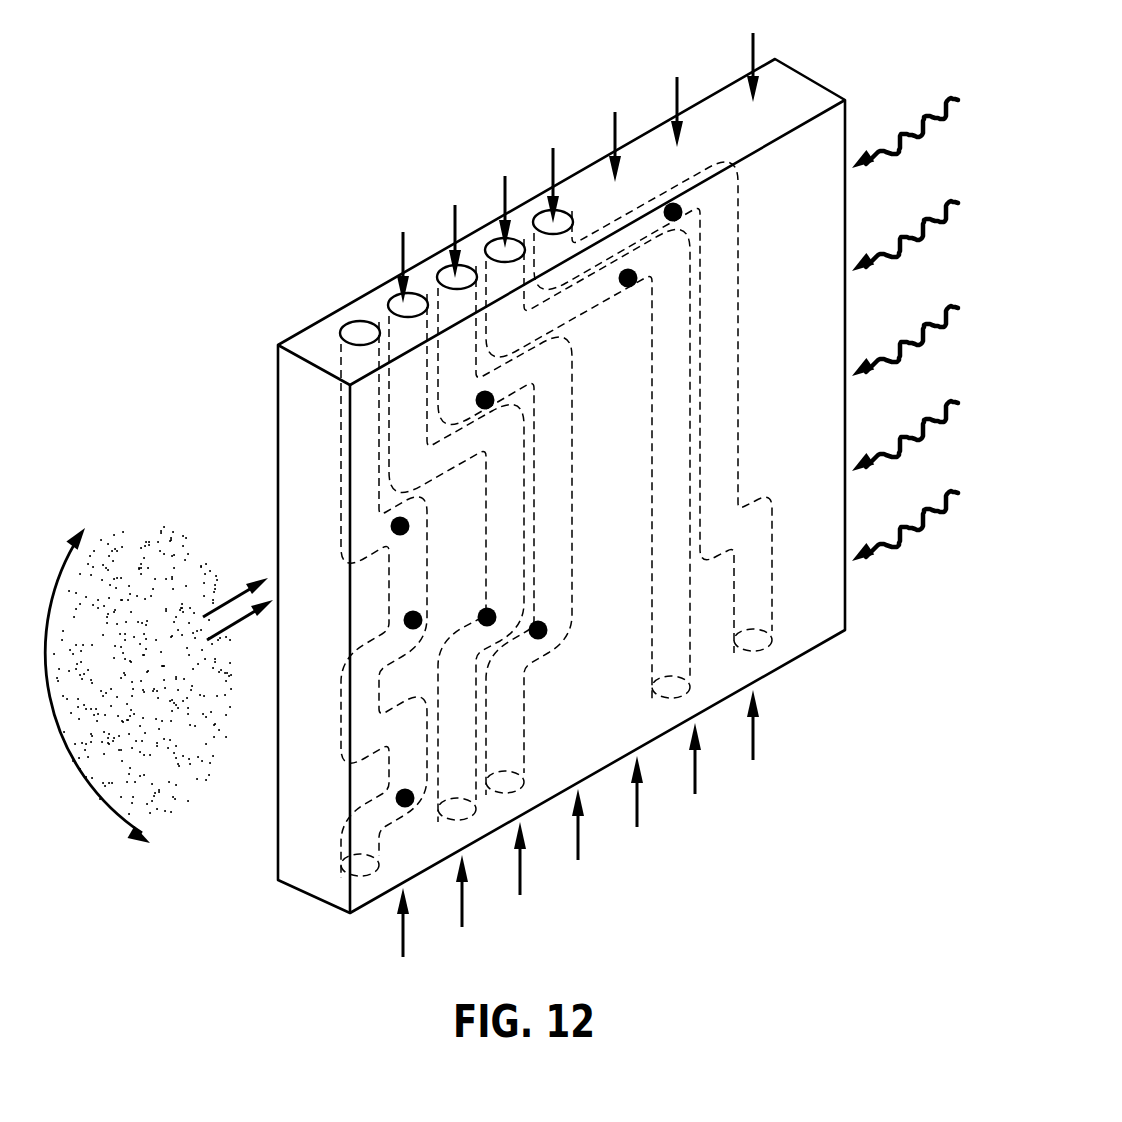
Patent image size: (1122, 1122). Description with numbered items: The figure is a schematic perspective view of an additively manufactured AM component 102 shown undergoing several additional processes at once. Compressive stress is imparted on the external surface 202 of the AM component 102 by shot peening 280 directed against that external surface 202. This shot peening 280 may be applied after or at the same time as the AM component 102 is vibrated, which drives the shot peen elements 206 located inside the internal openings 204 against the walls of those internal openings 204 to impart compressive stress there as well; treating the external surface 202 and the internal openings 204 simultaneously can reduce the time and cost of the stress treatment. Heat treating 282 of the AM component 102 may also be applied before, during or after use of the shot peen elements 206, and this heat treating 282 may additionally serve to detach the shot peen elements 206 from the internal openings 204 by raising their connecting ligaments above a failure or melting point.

The AM component 102 is at (866, 118).
The external surface 202 is at (587, 533).
The internal opening 204 is at (348, 330).
The shot peen element 206 is at (484, 505).
The shot peening 280 is at (138, 575).
The heat treating 282 is at (922, 138).